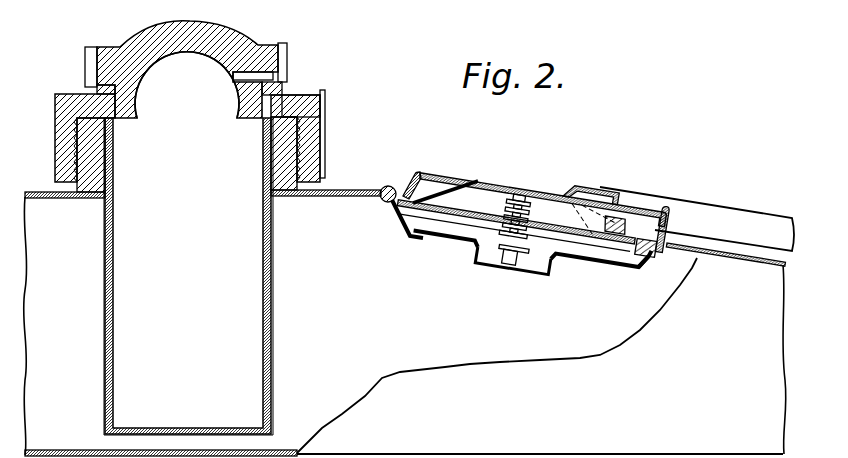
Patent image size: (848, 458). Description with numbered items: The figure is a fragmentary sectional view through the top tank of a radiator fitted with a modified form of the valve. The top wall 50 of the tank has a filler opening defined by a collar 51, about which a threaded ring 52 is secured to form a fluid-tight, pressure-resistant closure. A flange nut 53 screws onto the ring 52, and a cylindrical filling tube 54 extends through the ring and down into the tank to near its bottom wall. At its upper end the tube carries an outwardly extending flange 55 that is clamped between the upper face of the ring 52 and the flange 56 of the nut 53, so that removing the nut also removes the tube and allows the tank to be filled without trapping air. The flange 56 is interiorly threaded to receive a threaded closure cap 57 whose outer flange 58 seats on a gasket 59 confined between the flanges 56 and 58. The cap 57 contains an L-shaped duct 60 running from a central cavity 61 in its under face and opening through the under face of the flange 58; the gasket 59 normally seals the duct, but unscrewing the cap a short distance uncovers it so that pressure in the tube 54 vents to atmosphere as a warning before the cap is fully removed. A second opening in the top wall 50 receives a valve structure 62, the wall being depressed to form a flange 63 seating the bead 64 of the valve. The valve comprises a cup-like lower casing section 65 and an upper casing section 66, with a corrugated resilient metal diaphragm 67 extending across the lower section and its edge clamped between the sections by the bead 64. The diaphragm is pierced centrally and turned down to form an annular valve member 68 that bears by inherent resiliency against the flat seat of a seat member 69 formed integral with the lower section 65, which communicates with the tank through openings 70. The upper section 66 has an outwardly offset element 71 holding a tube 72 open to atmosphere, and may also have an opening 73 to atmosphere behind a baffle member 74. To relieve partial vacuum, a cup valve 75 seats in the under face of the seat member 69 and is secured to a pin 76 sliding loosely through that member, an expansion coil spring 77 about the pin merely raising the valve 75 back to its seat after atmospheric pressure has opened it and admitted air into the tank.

The top wall 50 is at (48, 192).
The collar 51 is at (116, 178).
The threaded ring 52 is at (302, 140).
The flange nut 53 is at (325, 110).
The cylindrical filling tube 54 is at (104, 243).
The outwardly extending flange 55 is at (322, 98).
The flange 56 is at (288, 93).
The threaded closure cap 57 is at (135, 62).
The outer flange 58 is at (92, 58).
The gasket 59 is at (97, 88).
The L-shaped duct 60 is at (246, 78).
The central cavity 61 is at (186, 72).
The valve structure 62 is at (497, 183).
The flange 63 is at (650, 248).
The bead 64 is at (667, 228).
The lower casing section 65 is at (626, 264).
The upper casing section 66 is at (517, 200).
The metal diaphragm 67 is at (398, 220).
The annular valve member 68 is at (508, 222).
The seat member 69 is at (545, 257).
The openings 70 is at (445, 238).
The outwardly offset element 71 is at (598, 178).
The tube 72 is at (742, 210).
The opening 73 is at (419, 176).
The baffle member 74 is at (452, 178).
The cup valve 75 is at (522, 262).
The pin 76 is at (504, 262).
The expansion coil spring 77 is at (527, 225).